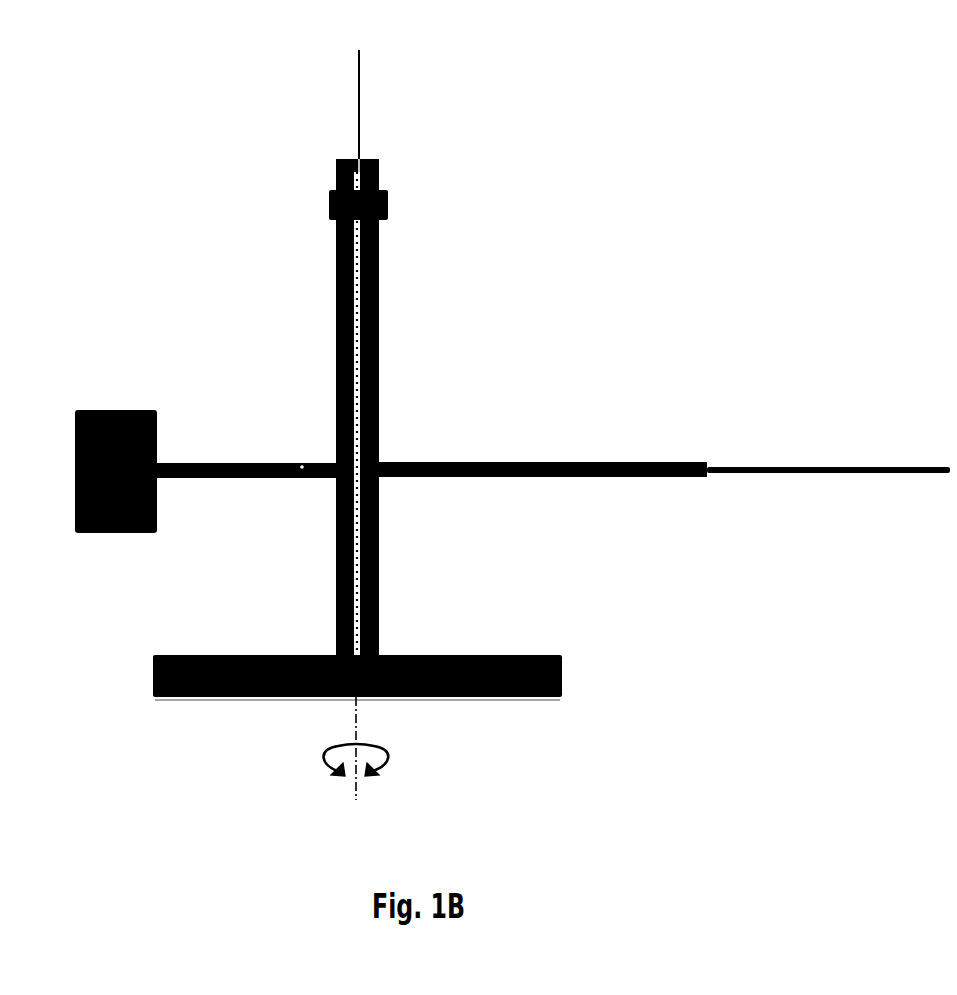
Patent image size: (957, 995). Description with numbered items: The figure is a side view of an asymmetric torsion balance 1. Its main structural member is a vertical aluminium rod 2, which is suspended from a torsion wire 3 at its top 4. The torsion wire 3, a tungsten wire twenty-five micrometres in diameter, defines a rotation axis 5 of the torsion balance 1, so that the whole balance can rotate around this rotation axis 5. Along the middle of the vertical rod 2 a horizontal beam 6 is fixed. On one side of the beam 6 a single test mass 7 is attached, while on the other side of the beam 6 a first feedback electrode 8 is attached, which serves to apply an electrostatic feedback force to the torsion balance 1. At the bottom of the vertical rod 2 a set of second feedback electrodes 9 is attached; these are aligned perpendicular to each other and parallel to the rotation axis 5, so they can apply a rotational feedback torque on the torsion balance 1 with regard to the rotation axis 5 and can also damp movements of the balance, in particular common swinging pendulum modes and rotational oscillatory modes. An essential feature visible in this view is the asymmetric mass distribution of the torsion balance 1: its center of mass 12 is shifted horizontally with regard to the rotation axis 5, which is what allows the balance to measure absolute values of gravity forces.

The asymmetric torsion balance 1 is at (688, 551).
The vertical aluminium rod 2 is at (346, 320).
The torsion wire 3 is at (360, 110).
The top 4 is at (352, 168).
The rotation axis 5 is at (356, 787).
The horizontal beam 6 is at (456, 469).
The test mass 7 is at (121, 432).
The first feedback electrode 8 is at (806, 469).
The second feedback electrodes 9 is at (238, 670).
The center of mass 12 is at (300, 466).